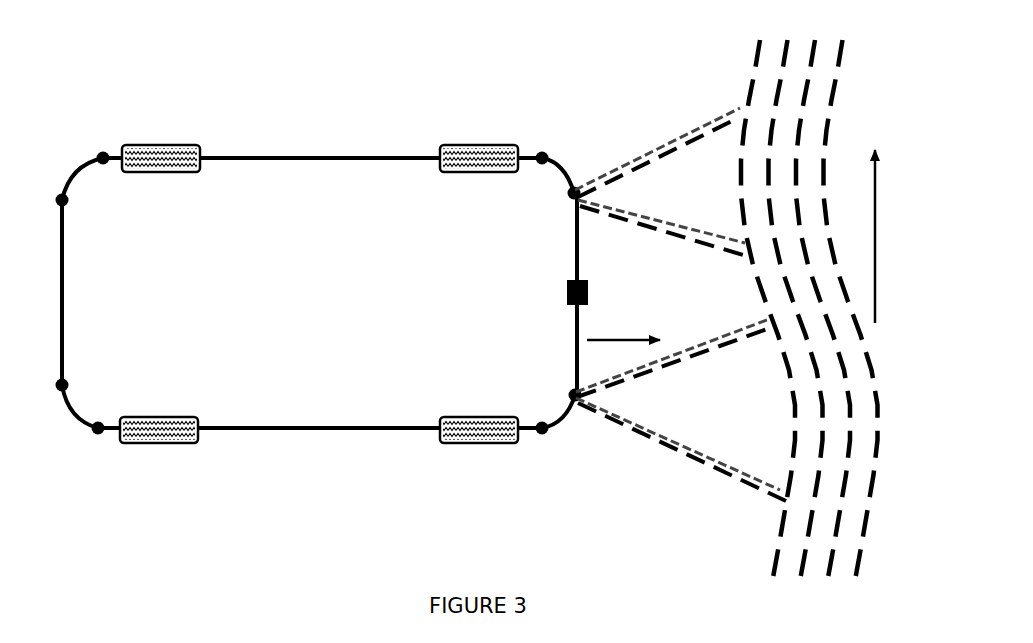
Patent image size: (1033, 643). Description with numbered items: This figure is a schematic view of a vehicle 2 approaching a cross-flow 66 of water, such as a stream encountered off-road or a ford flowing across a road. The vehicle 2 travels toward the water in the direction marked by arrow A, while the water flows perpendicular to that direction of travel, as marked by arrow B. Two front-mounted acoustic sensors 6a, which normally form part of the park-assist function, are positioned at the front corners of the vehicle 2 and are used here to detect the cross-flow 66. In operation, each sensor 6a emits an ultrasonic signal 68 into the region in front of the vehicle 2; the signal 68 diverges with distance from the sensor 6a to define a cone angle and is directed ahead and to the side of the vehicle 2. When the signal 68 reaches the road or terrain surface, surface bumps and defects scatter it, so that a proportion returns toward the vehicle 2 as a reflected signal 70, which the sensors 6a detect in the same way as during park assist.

The vehicle 2 is at (149, 92).
The front-mounted acoustic sensors 6a is at (574, 193).
The cross-flow of water 66 is at (740, 76).
The ultrasonic signal 68 is at (705, 140).
The reflected signal 70 is at (677, 143).